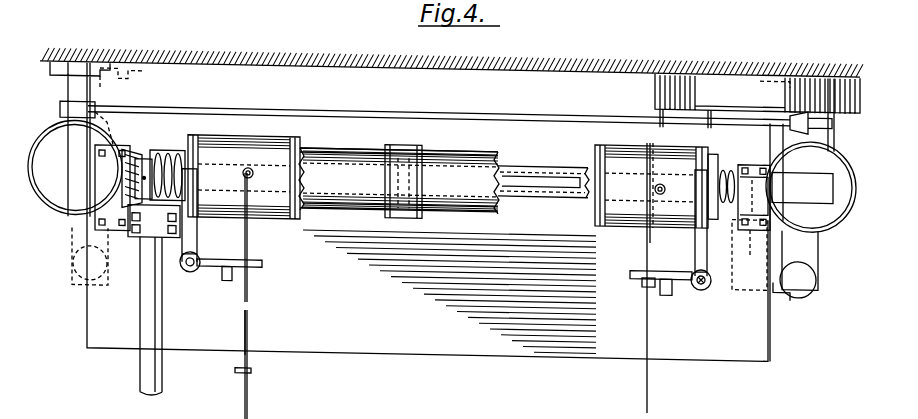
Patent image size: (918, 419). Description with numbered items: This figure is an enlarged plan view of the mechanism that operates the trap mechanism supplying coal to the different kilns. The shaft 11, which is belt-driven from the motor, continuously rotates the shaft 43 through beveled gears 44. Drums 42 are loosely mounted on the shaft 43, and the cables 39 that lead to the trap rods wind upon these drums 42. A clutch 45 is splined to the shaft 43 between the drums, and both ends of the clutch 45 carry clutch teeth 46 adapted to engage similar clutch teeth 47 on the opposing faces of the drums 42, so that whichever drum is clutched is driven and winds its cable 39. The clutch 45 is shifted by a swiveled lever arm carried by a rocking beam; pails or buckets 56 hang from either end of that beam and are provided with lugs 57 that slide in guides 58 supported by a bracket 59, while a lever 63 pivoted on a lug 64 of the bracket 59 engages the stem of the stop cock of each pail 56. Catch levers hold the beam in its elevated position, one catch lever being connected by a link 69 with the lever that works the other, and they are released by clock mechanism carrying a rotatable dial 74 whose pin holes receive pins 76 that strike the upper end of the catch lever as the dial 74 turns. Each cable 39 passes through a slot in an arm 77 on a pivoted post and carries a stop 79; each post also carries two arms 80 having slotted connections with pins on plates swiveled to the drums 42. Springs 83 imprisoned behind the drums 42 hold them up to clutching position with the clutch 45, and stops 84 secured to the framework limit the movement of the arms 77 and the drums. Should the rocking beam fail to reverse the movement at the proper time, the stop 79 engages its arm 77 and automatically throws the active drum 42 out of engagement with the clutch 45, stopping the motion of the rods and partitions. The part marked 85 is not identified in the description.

The shaft 11 is at (132, 315).
The cables 39 is at (640, 334).
The drums 42 is at (634, 180).
The shaft 43 is at (565, 170).
The beveled gears 44 is at (130, 230).
The clutch 45 is at (399, 181).
The clutch teeth 46 is at (498, 204).
The clutch teeth 47 is at (582, 196).
The pails or buckets 56 is at (836, 220).
The lugs 57 is at (72, 240).
The guides 58 is at (74, 264).
The bracket 59 is at (250, 326).
The lever 63 is at (736, 247).
The lug 64 is at (779, 285).
The link 69 is at (450, 112).
The rotatable dial 74 is at (757, 94).
The pins 76 is at (658, 104).
The arm 77 is at (630, 262).
The stop 79 is at (645, 275).
The arms 80 is at (700, 240).
The springs 83 is at (166, 157).
The stops 84 is at (668, 282).
The bearing block 85 is at (730, 160).